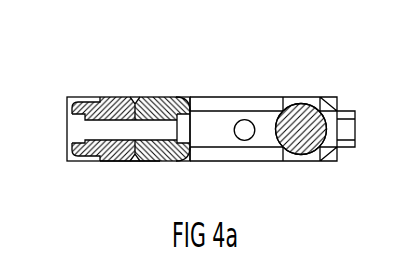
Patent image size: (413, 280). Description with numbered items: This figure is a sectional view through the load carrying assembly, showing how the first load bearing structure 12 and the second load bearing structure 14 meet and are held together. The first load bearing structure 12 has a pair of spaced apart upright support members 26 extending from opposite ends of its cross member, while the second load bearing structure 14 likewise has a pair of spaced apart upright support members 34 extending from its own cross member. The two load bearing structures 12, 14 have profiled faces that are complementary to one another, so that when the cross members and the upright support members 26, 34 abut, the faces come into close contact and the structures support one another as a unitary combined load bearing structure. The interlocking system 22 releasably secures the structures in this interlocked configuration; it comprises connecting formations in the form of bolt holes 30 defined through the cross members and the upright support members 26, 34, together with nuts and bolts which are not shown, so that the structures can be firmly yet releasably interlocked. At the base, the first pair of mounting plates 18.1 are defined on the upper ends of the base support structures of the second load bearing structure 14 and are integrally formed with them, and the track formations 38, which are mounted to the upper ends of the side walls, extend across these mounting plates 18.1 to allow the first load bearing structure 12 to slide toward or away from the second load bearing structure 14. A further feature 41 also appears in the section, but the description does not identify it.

The first load bearing structure 12 is at (155, 107).
The second load bearing structure 14 is at (108, 102).
The first pair of mounting plates 18.1 is at (262, 105).
The interlocking system 22 is at (128, 163).
The upright support members 26 is at (180, 98).
The bolt holes 30 is at (100, 137).
The upright support members 34 is at (87, 100).
The track formations 38 is at (348, 123).
The lower lip 41 is at (182, 163).